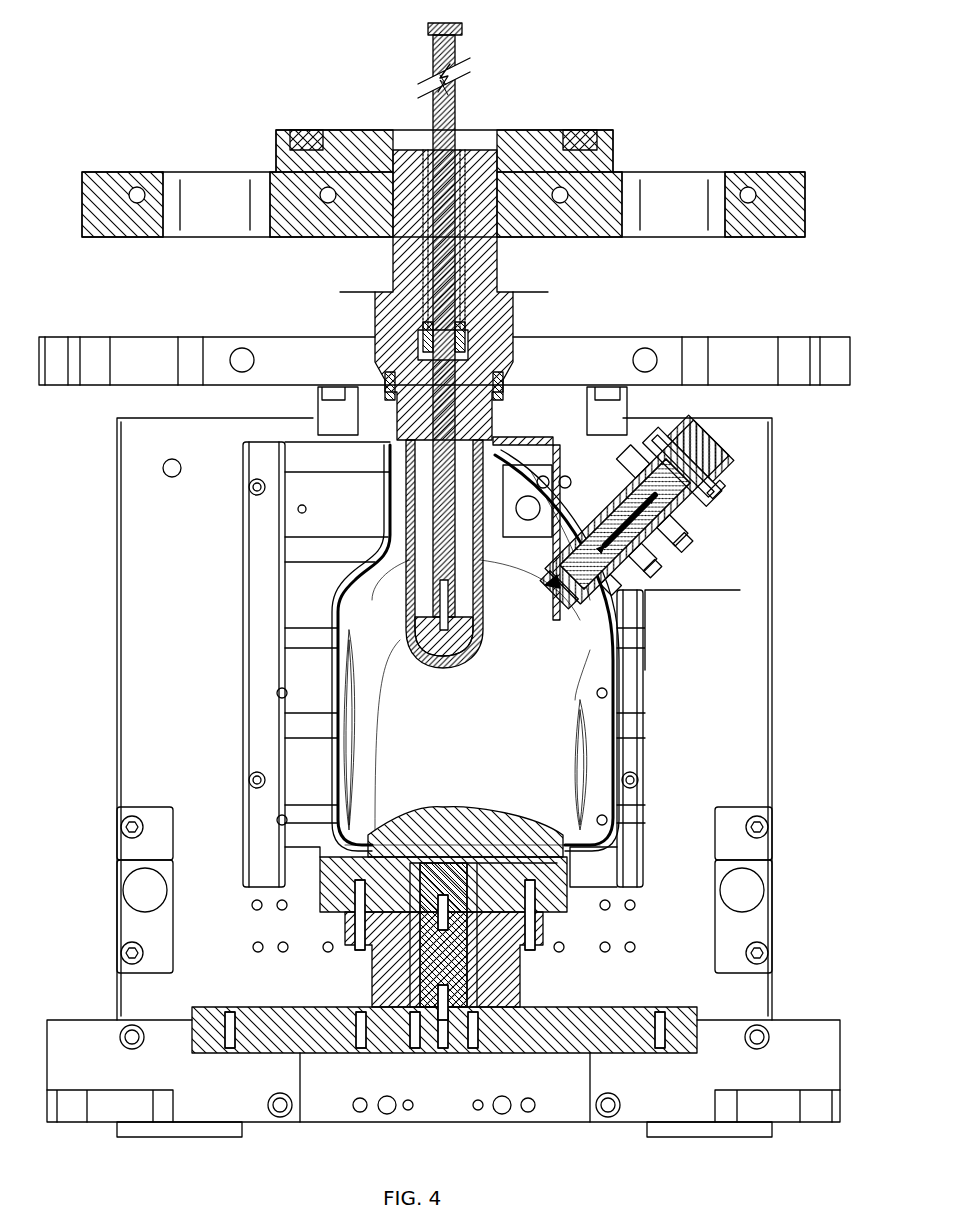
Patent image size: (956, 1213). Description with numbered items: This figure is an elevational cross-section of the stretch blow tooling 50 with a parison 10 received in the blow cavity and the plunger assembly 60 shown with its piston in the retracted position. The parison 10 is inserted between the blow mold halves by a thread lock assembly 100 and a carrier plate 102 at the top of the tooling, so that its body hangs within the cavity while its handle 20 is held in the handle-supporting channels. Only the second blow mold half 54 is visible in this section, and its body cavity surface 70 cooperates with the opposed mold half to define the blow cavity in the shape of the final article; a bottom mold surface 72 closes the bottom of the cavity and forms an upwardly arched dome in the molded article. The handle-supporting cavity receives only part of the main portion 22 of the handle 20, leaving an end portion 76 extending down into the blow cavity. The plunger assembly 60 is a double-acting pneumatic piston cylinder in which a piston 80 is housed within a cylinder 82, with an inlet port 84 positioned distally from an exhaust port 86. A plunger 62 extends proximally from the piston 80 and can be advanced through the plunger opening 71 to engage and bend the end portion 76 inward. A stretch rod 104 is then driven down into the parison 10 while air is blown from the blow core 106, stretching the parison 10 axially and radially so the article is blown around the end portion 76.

The parison 10 is at (480, 637).
The handle 20 is at (542, 588).
The main portion 22 is at (560, 500).
The stretch blow tooling 50 is at (92, 486).
The second blow mold half 54 is at (245, 729).
The plunger assembly 60 is at (745, 466).
The plunger 62 is at (613, 587).
The body cavity surface 70 is at (512, 742).
The plunger opening 71 is at (590, 655).
The bottom mold surface 72 is at (527, 817).
The end portion 76 is at (555, 590).
The piston 80 is at (687, 560).
The cylinder 82 is at (707, 490).
The inlet port 84 is at (717, 547).
The exhaust port 86 is at (673, 593).
The thread lock assembly 100 is at (550, 383).
The carrier plate 102 is at (785, 335).
The stretch rod 104 is at (470, 280).
The blow core 106 is at (423, 268).